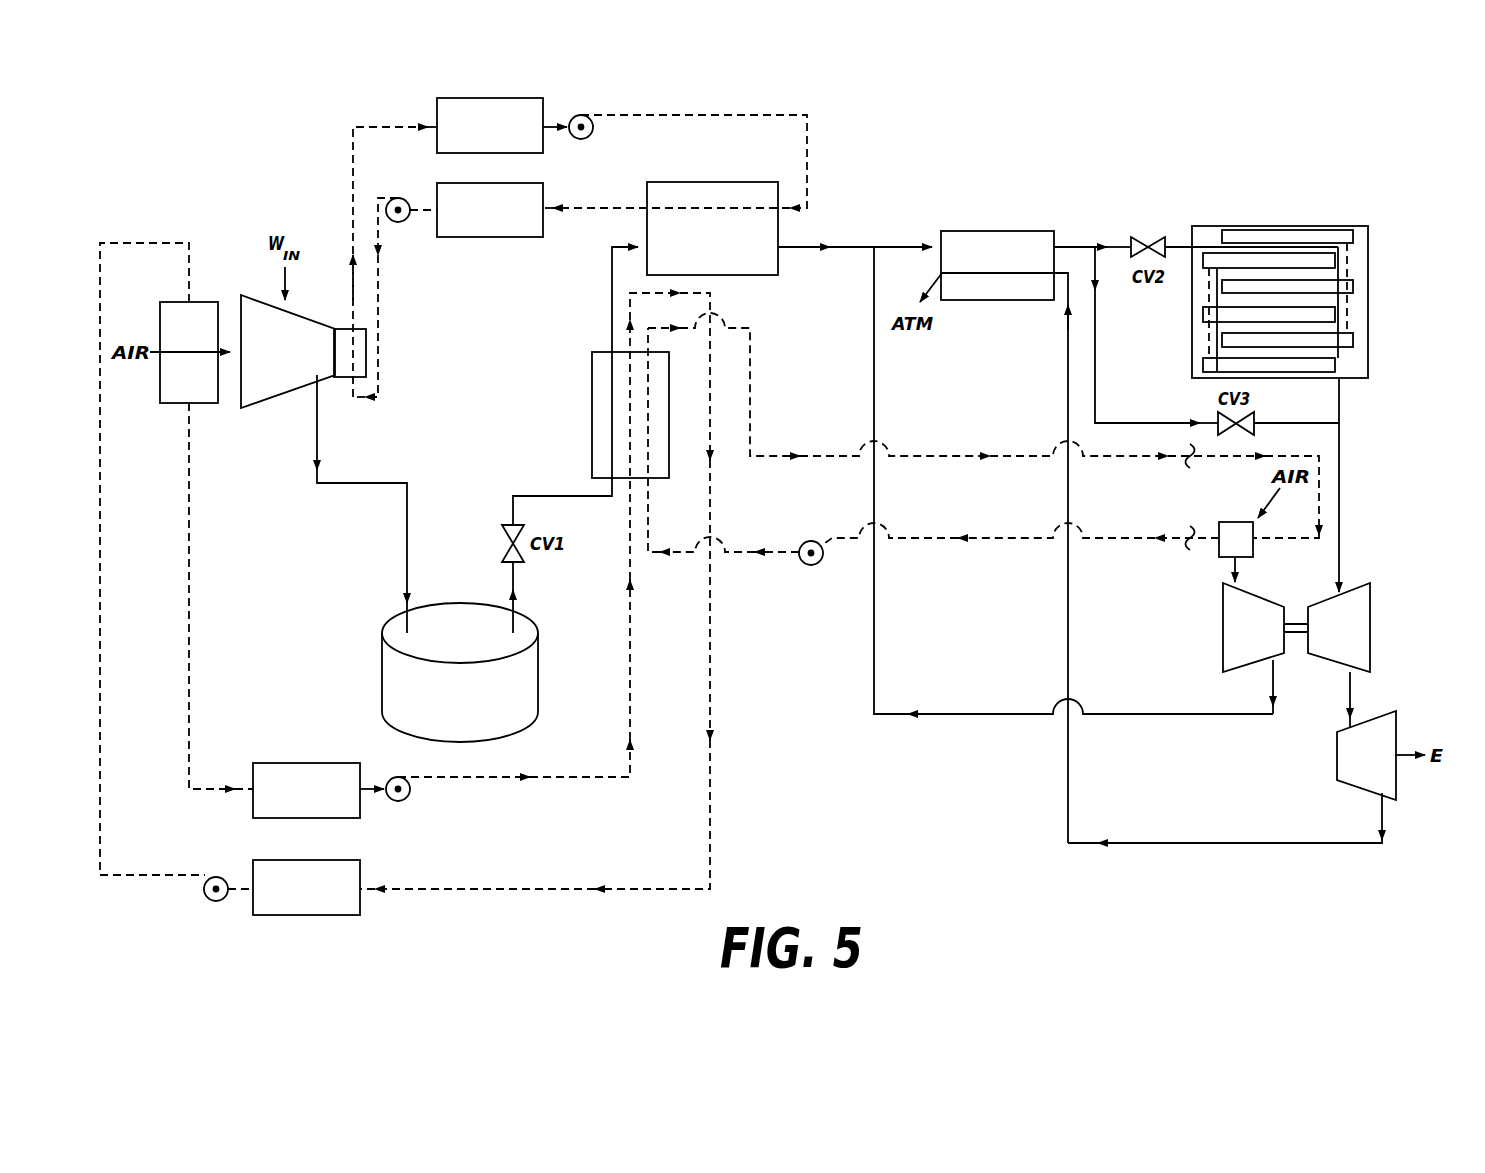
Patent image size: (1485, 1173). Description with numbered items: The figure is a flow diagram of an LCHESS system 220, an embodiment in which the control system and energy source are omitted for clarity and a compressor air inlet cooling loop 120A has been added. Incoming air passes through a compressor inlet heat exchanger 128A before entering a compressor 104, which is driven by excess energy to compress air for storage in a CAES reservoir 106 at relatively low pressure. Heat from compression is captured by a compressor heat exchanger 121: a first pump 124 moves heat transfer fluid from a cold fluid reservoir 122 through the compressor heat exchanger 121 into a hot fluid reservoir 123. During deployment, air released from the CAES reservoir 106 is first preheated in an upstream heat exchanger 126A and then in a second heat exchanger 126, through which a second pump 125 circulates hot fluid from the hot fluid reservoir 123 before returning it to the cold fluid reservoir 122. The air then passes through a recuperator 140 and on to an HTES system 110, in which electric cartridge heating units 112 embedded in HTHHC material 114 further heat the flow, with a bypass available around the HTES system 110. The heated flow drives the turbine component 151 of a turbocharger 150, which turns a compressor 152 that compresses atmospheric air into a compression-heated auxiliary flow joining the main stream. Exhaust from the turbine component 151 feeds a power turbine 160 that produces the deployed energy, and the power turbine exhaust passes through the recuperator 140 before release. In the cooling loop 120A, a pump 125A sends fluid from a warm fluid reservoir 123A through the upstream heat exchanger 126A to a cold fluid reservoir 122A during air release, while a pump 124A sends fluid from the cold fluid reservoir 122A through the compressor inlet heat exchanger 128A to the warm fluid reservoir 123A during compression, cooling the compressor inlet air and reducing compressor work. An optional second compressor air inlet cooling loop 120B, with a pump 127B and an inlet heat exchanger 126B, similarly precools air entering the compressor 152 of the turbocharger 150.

The LCHESS system 220 is at (175, 160).
The compressor 104 is at (300, 392).
The CAES reservoir 106 is at (382, 660).
The HTES system 110 is at (1324, 263).
The electric cartridge heating units 112 is at (1353, 236).
The HTHHC material 114 is at (1363, 260).
The compressor heat exchanger 121 is at (338, 379).
The cold fluid reservoir 122 is at (437, 184).
The hot fluid reservoir 123 is at (437, 100).
The first pump 124 is at (401, 222).
The second pump 125 is at (577, 116).
The second heat exchanger 126 is at (752, 182).
The upstream heat exchanger 126A is at (592, 415).
The inlet heat exchanger 126B is at (1253, 550).
The pump 127B is at (809, 565).
The compressor inlet heat exchanger 128A is at (195, 403).
The compressor air inlet cooling loop 120A is at (160, 888).
The second compressor air inlet cooling loop 120B is at (914, 550).
The cold fluid reservoir 122A is at (253, 861).
The warm fluid reservoir 123A is at (263, 763).
The pump 124A is at (216, 901).
The pump 125A is at (406, 799).
The recuperator 140 is at (960, 231).
The turbocharger 150 is at (1311, 608).
The turbine component 151 is at (1370, 658).
The compressor 152 is at (1223, 628).
The power turbine 160 is at (1396, 795).